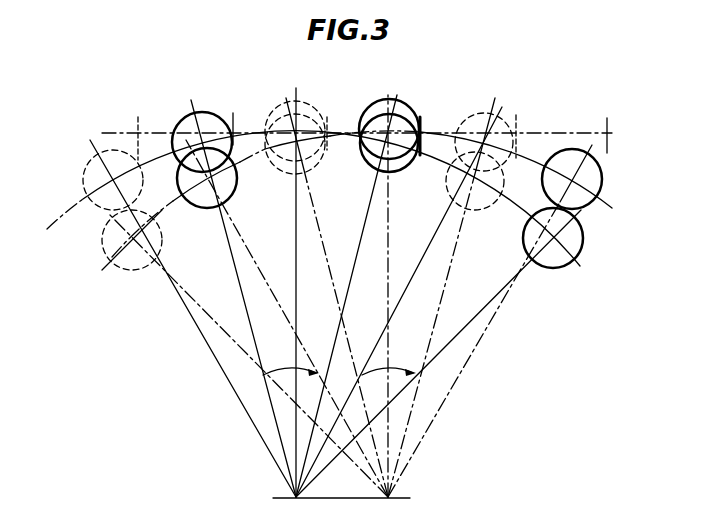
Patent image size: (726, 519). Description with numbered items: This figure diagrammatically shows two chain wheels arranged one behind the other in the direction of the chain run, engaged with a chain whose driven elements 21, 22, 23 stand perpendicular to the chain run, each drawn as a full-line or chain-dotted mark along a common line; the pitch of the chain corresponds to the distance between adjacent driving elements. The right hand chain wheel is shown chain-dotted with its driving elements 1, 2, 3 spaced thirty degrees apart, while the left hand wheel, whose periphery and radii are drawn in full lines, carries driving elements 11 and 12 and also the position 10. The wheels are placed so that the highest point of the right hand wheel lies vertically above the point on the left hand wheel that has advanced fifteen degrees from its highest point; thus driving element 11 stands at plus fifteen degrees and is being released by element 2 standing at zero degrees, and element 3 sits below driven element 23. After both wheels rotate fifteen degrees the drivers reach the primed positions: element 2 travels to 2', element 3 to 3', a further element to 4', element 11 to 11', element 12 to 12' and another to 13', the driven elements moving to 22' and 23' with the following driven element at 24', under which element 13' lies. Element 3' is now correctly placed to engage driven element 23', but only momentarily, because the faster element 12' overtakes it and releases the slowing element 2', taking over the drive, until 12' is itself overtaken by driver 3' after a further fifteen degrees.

The driving element 1 is at (603, 180).
The roller (second position) 10 is at (526, 243).
The driving element 2 is at (389, 116).
The driving element 11 is at (382, 155).
The driving element position 2' is at (484, 127).
The driving element position 11' is at (463, 186).
The driving element 12 is at (202, 128).
The driving element 3 is at (207, 192).
The driving element position 12' is at (297, 114).
The driving element position 3' is at (295, 155).
The driving element position 13' is at (101, 180).
The driving element position 4' is at (132, 253).
The driven element 21 is at (609, 124).
The driven element 22 is at (435, 126).
The driven element position 22' is at (535, 127).
The driven element 23 is at (247, 119).
The driven element position 23' is at (341, 122).
The driven element position 24' is at (154, 130).